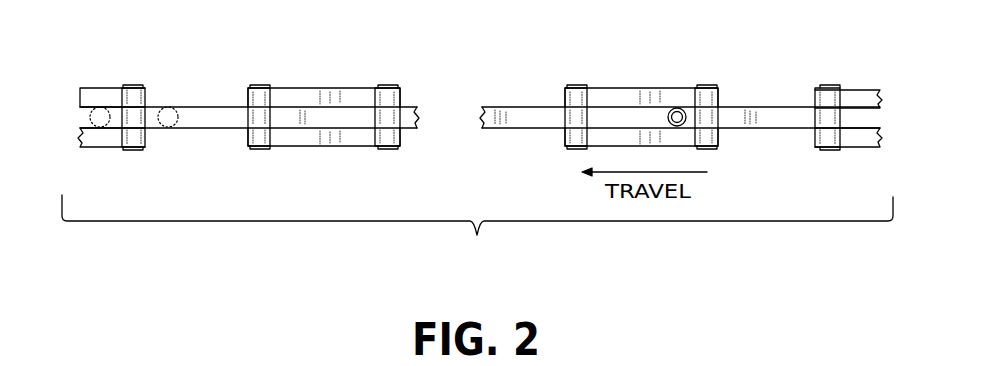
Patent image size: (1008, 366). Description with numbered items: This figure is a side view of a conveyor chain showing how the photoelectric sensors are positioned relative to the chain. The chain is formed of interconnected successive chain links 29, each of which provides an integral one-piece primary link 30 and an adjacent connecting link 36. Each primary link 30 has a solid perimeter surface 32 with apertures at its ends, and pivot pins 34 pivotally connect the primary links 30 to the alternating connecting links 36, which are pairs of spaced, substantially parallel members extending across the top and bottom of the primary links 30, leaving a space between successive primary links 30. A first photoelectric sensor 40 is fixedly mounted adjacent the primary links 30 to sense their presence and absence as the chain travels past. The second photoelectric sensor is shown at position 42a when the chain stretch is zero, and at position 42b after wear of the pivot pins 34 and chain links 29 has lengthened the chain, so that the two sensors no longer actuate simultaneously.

The chain link 29 is at (259, 78).
The primary link 30 is at (213, 107).
The solid perimeter surface 32 is at (188, 112).
The pivot pin 34 is at (388, 87).
The connecting link 36 is at (350, 100).
The first photoelectric sensor 40 is at (667, 109).
The second photoelectric sensor position at zero chain stretch 42a is at (100, 118).
The second photoelectric sensor position after chain lengthening 42b is at (168, 118).